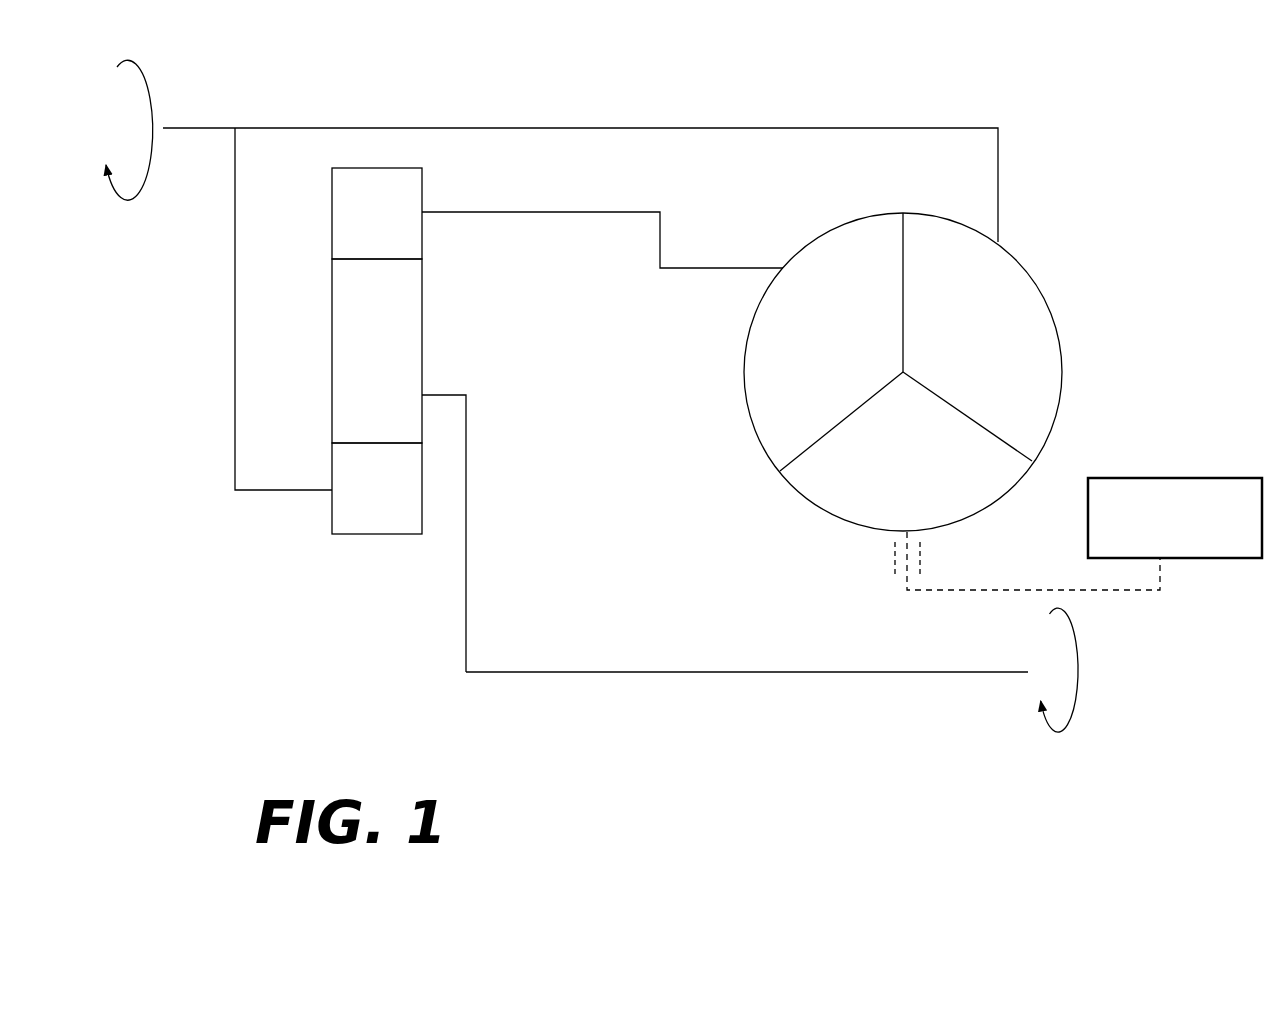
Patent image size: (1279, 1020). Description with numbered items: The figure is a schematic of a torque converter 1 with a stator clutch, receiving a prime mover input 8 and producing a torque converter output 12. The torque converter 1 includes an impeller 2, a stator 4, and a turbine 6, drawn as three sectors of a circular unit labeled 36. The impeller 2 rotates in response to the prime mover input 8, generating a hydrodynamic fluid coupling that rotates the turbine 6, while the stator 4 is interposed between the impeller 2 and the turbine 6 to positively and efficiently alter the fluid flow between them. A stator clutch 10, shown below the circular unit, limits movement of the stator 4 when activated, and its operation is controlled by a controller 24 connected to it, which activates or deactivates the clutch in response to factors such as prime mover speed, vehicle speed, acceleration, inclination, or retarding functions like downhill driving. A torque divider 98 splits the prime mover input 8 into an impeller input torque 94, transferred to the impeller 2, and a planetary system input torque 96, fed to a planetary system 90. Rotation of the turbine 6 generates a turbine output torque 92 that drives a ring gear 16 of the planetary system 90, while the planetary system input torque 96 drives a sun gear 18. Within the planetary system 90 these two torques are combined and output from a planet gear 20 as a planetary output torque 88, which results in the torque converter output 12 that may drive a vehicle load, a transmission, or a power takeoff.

The torque converter 1 is at (1016, 108).
The impeller 2 is at (1030, 390).
The stator 4 is at (836, 481).
The turbine 6 is at (791, 346).
The prime mover input 8 is at (116, 130).
The stator clutch 10 is at (893, 567).
The torque converter output 12 is at (1081, 670).
The ring gear 16 is at (343, 204).
The sun gear 18 is at (385, 535).
The planet gear 20 is at (343, 368).
The controller 24 is at (1084, 534).
The torque converter 36 is at (1066, 319).
The planetary output torque 88 is at (509, 673).
The planetary system 90 is at (431, 359).
The turbine output torque 92 is at (664, 237).
The impeller input torque 94 is at (814, 128).
The planetary system input torque 96 is at (241, 491).
The torque divider 98 is at (329, 127).